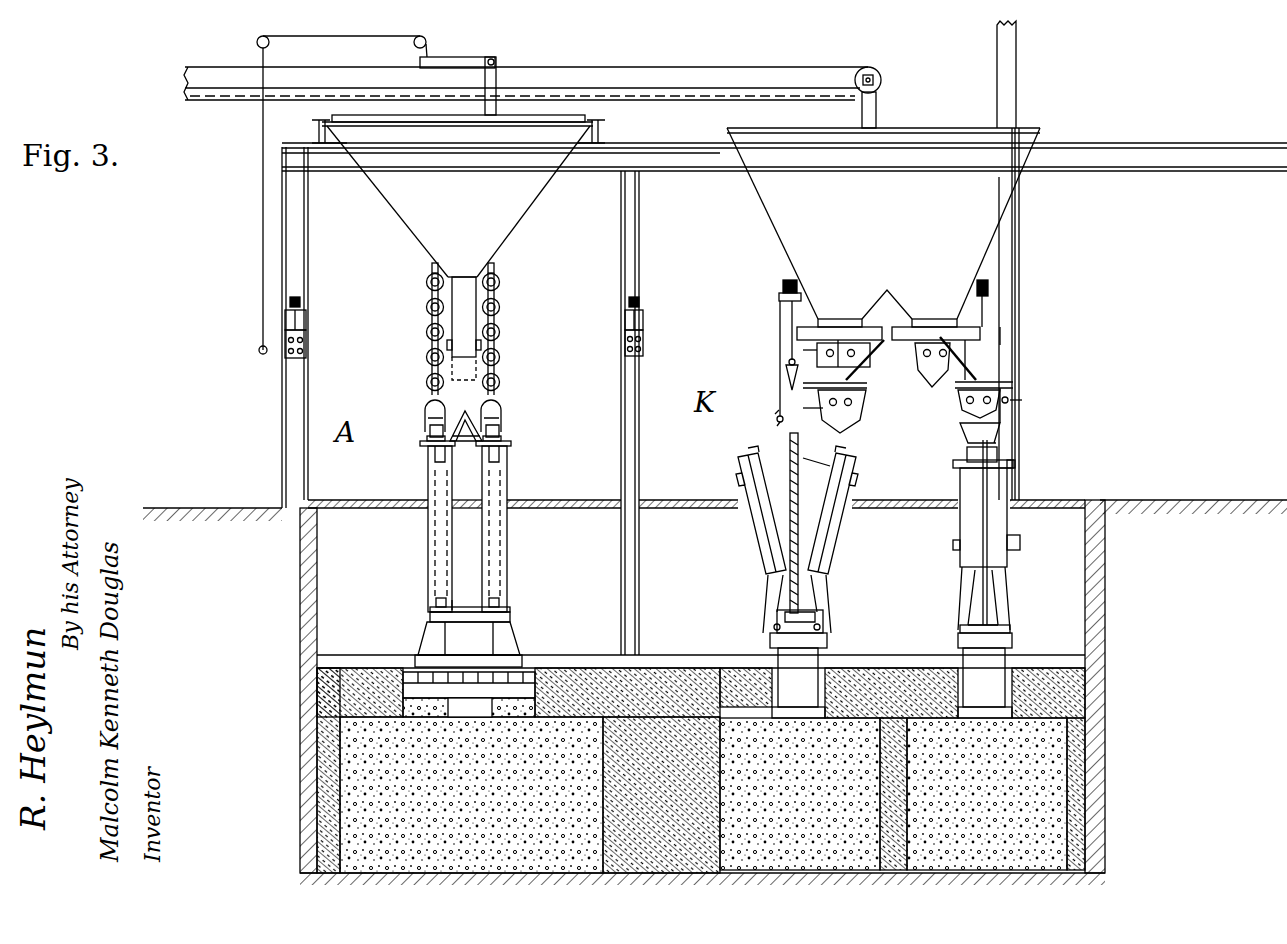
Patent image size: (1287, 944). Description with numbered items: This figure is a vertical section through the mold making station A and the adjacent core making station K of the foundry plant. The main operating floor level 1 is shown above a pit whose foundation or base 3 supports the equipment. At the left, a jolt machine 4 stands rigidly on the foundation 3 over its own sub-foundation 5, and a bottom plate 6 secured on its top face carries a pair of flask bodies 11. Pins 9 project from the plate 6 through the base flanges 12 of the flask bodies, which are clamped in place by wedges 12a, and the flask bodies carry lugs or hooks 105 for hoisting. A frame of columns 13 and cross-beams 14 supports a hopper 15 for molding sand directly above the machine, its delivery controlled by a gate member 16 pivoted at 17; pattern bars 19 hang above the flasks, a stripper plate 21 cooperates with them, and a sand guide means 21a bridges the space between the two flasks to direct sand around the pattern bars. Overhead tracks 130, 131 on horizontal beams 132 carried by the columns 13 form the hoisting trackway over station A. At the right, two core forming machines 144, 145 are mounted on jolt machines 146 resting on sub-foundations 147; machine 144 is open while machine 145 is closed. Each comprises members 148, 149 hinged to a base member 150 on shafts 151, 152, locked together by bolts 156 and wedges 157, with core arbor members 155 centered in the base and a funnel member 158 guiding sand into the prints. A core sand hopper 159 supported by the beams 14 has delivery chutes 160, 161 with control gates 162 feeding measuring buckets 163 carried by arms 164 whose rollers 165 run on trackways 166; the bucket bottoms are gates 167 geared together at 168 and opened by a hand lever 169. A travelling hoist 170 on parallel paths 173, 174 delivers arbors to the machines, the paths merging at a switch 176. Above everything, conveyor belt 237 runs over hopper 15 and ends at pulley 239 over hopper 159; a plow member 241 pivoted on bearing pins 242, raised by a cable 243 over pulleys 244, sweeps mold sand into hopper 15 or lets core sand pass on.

The main operating floor level 1 is at (650, 500).
The foundation or base 3 is at (558, 654).
The jolt machine 4 is at (505, 641).
The sub-foundation 5 is at (345, 778).
The base or bottom plate 6 is at (509, 614).
The post or pin 9 is at (469, 585).
The flask body 11 is at (469, 529).
The base flange 12 is at (440, 610).
The wedge 12a is at (465, 590).
The column 13 is at (659, 264).
The cross-beam 14 is at (624, 160).
The hopper or bin 15 is at (505, 224).
The gate member 16 is at (472, 366).
The pivot 17 is at (483, 346).
The pattern bar 19 is at (461, 350).
The stripper plate 21 is at (464, 432).
The sand guide means 21a is at (466, 412).
The lug or hook 105 is at (497, 458).
The track 130 is at (298, 297).
The track 131 is at (640, 297).
The horizontal beam 132 is at (486, 327).
The core member forming machine 144 is at (832, 585).
The core member forming machine 145 is at (1008, 577).
The jolt machine 146 is at (916, 625).
The sub-foundation 147 is at (858, 722).
The hinged member 148 is at (760, 520).
The hinged member 149 is at (835, 520).
The base member 150 is at (921, 609).
The horizontal shaft 151 is at (772, 626).
The horizontal shaft 152 is at (803, 648).
The core arbor member 155 is at (796, 455).
The bolt or bar 156 is at (953, 499).
The wedge 157 is at (989, 505).
The funnel member 158 is at (996, 432).
The hopper or bin 159 is at (988, 206).
The delivery chute 160 is at (846, 327).
The delivery chute 161 is at (934, 327).
The control gate 162 is at (876, 338).
The measuring bucket or container 163 is at (966, 354).
The arm 164 is at (960, 385).
The roller 165 is at (965, 380).
The trackway 166 is at (909, 332).
The gate 167 is at (950, 419).
The gearing 168 is at (1050, 389).
The hand lever 169 is at (1008, 398).
The travelling hoist 170 is at (779, 313).
The parallel path 173 is at (783, 287).
The parallel path 174 is at (990, 285).
The switch 176 is at (778, 420).
The conveyor belt 237 is at (610, 67).
The pulley 239 is at (880, 73).
The plow member 241 is at (458, 57).
The bearing pin 242 is at (496, 61).
The pull wire or cable 243 is at (359, 37).
The pulley 244 is at (336, 37).